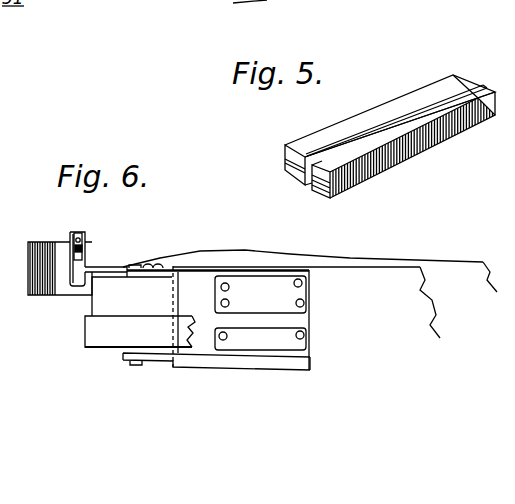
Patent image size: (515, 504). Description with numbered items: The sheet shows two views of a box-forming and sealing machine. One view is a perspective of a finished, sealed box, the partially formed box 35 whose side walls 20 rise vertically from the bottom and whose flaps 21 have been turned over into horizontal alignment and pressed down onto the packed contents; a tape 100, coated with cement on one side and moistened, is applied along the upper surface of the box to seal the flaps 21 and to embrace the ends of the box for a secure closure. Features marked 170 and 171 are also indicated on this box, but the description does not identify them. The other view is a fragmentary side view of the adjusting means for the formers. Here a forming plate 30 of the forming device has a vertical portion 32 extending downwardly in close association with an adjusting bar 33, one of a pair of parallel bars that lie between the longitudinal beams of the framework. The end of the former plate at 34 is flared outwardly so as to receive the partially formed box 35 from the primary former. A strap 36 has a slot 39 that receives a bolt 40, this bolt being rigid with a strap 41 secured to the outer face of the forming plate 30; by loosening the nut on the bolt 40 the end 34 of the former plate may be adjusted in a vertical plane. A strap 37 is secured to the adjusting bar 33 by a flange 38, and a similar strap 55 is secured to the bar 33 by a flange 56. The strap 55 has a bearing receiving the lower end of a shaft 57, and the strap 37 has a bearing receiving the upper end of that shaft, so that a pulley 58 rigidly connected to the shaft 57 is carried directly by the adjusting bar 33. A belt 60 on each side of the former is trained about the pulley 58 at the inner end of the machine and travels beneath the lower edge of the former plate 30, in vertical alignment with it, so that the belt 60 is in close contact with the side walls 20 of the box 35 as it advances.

In FIG. 5, the side walls 20 is at (448, 130).
In FIG. 5, the flaps 21 is at (377, 113).
In FIG. 5, the partially formed box 35 is at (422, 85).
In FIG. 5, the tape 100 is at (458, 92).
In FIG. 5, the groove 170 is at (323, 186).
In FIG. 5, the grooves 171 is at (286, 160).
In FIG. 6, the forming plate 30 is at (310, 279).
In FIG. 6, the vertical portion 32 is at (204, 258).
In FIG. 6, the adjusting bars 33 is at (340, 276).
In FIG. 6, the flared end of former 34 is at (30, 278).
In FIG. 6, the strap 36 is at (107, 268).
In FIG. 6, the strap 37 is at (254, 273).
In FIG. 6, the flange 38 is at (83, 246).
In FIG. 6, the slot 39 is at (85, 255).
In FIG. 6, the bolt 40 is at (80, 245).
In FIG. 6, the strap 41 is at (57, 228).
In FIG. 6, the strap 55 is at (248, 357).
In FIG. 6, the flange 56 is at (306, 347).
In FIG. 6, the shaft 57 is at (135, 365).
In FIG. 6, the pulley 58 is at (98, 305).
In FIG. 6, the belt 60 is at (108, 338).